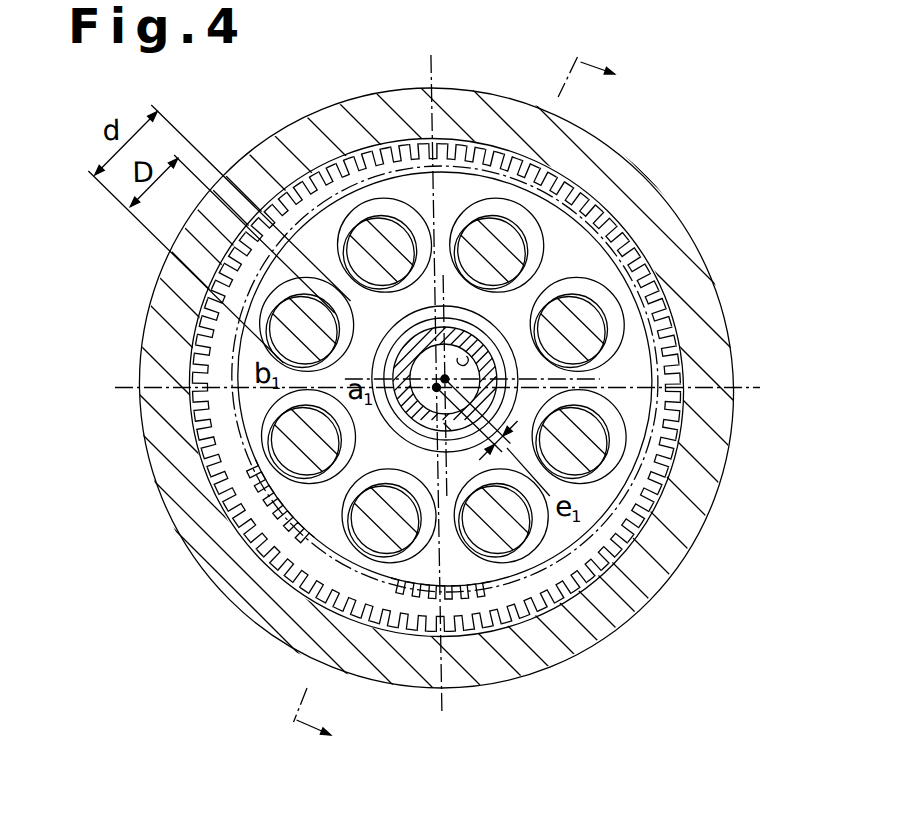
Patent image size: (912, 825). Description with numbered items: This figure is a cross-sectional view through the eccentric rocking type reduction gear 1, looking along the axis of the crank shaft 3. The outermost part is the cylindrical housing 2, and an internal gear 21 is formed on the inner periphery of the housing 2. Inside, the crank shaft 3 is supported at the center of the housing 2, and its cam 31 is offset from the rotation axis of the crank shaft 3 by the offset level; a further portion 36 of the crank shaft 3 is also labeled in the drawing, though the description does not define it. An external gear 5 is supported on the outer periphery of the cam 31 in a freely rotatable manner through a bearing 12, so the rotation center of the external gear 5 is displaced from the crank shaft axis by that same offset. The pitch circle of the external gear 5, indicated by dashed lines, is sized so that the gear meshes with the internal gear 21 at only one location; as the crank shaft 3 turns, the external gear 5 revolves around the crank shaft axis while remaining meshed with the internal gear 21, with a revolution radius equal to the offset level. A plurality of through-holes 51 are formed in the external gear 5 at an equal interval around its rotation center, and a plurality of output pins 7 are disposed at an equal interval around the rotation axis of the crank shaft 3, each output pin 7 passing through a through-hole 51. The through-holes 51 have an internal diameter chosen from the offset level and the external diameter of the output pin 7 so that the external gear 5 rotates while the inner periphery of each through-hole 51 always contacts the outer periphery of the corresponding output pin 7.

The eccentric rocking type reduction gear 1 is at (466, 412).
The housing 2 is at (652, 192).
The internal gear 21 is at (680, 347).
The crank shaft 3 is at (398, 425).
The cam 31 is at (477, 334).
The shaft portion of crankshaft 36 is at (284, 376).
The external gear 5 is at (312, 510).
The through-holes 51 is at (508, 216).
The output pins 7 is at (522, 254).
The bearing 12 is at (393, 327).